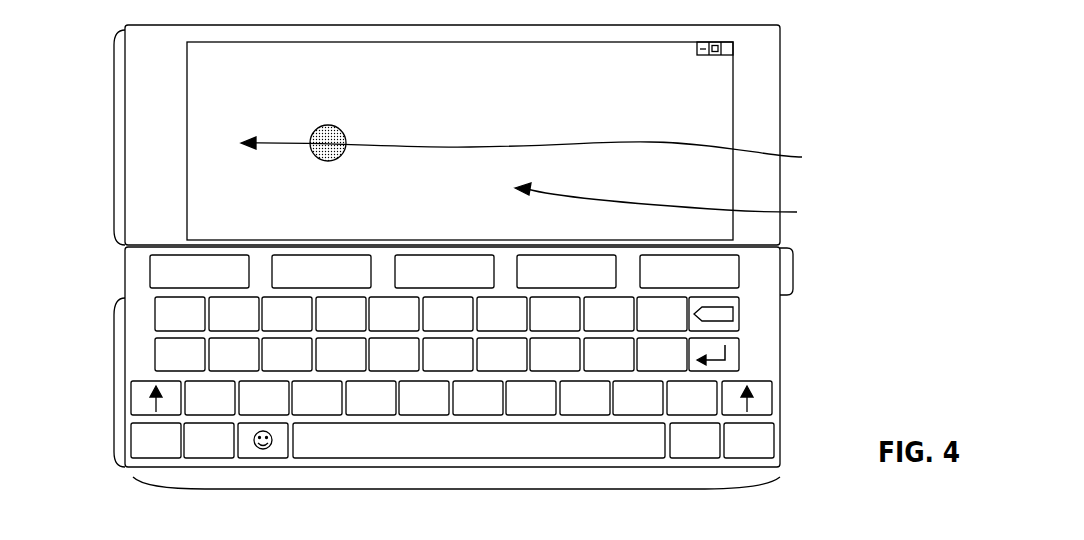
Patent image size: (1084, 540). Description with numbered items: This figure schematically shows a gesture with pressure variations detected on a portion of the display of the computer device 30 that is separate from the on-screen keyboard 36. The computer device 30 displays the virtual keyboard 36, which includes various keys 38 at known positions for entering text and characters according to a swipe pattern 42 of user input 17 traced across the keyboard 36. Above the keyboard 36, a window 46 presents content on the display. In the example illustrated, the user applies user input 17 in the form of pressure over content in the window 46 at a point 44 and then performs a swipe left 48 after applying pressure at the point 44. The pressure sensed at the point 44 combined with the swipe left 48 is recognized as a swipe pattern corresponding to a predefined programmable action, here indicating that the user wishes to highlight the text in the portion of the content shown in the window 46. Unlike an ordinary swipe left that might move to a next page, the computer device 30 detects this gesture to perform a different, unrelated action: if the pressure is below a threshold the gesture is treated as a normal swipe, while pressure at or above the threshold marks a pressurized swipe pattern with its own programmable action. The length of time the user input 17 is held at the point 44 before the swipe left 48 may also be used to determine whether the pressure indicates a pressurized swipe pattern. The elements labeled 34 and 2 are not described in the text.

The computer device 30 is at (818, 78).
The display housing portion 34 is at (114, 135).
The on-screen keyboard 36 is at (114, 375).
The keys 38 is at (456, 503).
The swipe pattern 42 is at (793, 272).
The window 46 is at (733, 108).
The point 44 is at (544, 155).
The swipe left 48 is at (250, 144).
The user input 17 is at (673, 204).
The page number 2 is at (459, 218).